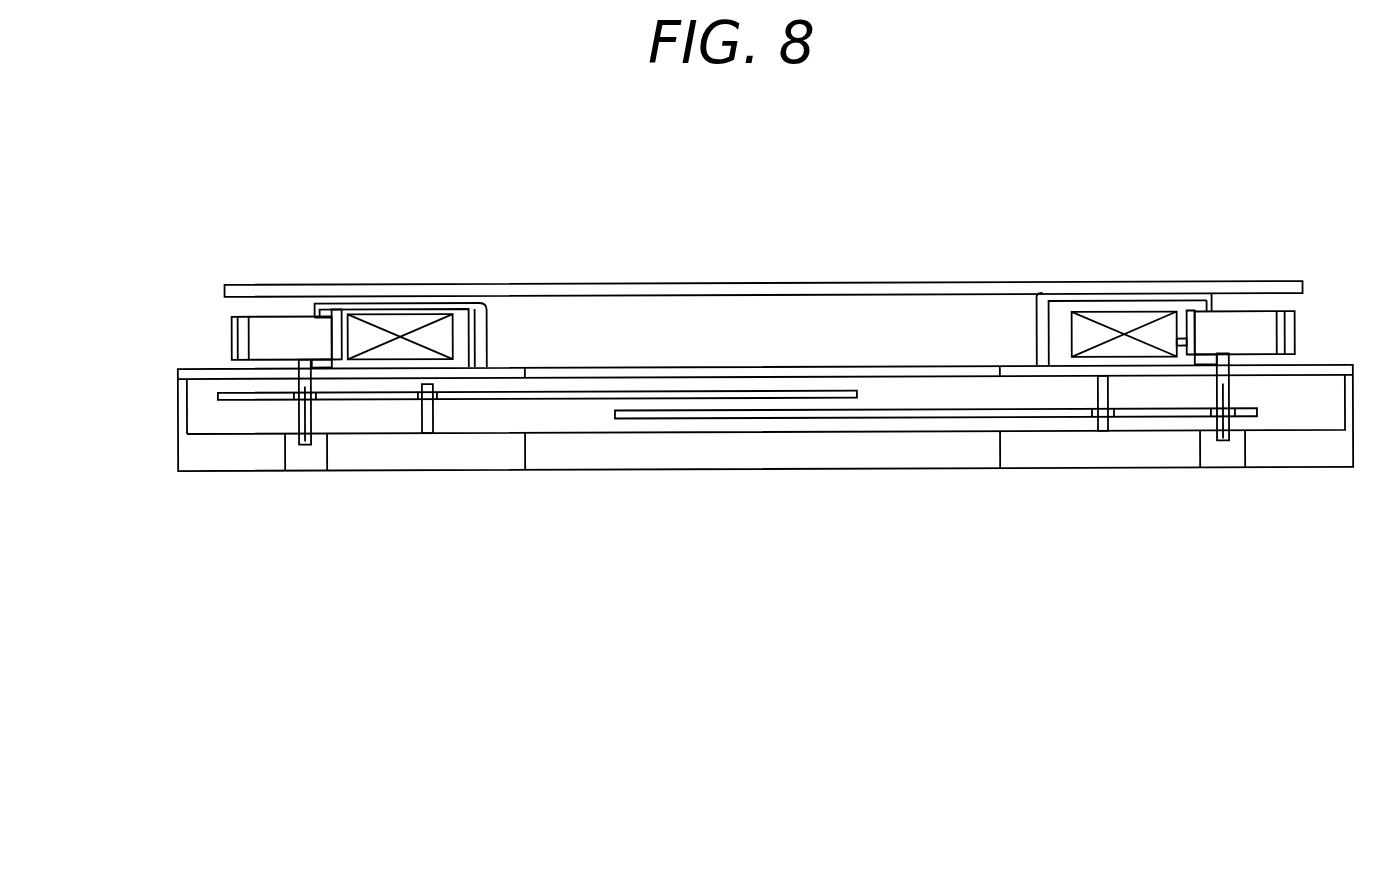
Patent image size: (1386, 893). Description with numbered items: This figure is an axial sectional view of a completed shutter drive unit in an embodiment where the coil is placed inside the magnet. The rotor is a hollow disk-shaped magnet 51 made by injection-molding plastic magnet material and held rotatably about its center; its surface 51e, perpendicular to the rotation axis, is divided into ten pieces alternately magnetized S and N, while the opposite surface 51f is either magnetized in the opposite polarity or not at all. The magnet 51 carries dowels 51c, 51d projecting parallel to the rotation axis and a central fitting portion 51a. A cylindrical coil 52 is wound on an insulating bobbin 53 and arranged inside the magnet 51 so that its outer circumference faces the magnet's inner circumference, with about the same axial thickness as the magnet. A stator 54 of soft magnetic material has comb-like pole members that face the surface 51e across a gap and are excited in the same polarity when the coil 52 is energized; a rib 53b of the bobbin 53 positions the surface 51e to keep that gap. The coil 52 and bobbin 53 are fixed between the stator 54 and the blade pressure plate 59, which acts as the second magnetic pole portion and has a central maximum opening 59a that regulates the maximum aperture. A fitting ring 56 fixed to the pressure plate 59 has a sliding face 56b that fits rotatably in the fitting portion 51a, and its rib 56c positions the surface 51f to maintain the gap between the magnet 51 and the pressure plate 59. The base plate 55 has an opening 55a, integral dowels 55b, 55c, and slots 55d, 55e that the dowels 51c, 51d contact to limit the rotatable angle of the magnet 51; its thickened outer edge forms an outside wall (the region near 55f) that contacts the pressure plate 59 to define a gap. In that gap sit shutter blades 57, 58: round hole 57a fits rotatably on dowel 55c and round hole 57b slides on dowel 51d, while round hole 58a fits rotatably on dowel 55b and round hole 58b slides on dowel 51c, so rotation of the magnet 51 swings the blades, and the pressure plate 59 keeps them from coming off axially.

The magnet 51 is at (1261, 322).
The fitting portion 51a is at (1194, 320).
The dowel 51c is at (1215, 402).
The dowel 51d is at (312, 418).
The surface 51e is at (1223, 312).
The surface 51f is at (1266, 357).
The coil 52 is at (1082, 332).
The bobbin 53 is at (408, 308).
The rib 53b is at (331, 308).
The stator 54 is at (286, 293).
The base plate 55 is at (1342, 454).
The opening 55a is at (947, 457).
The dowel 55b is at (1100, 394).
The dowel 55c is at (434, 418).
The slot 55d is at (1213, 454).
The slot 55e is at (312, 460).
The base side wall 55f is at (273, 460).
The fitting ring 56 is at (333, 358).
The face 56b is at (1185, 347).
The rib 56c is at (1191, 358).
The shutter blade 57 is at (222, 402).
The round hole 57a is at (436, 390).
The round hole 57b is at (288, 398).
The shutter blade 58 is at (883, 416).
The round hole 58a is at (1118, 418).
The round hole 58b is at (1240, 419).
The blade pressure plate 59 is at (216, 371).
The maximum opening 59a is at (566, 368).